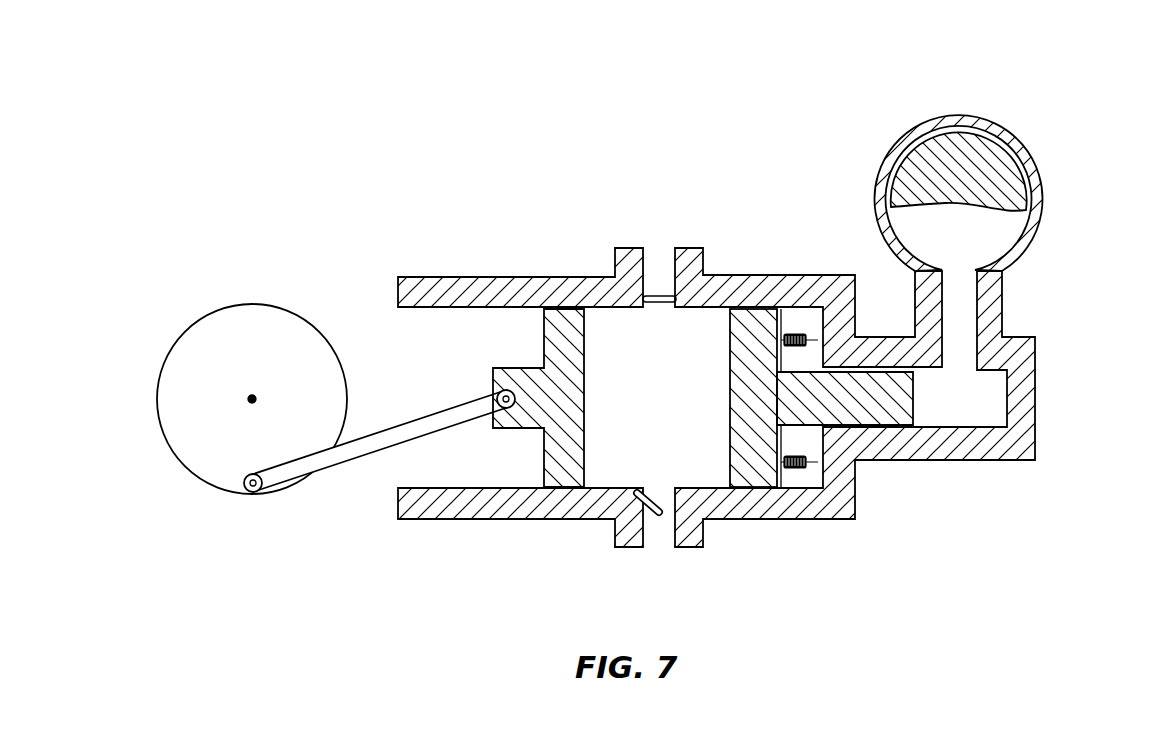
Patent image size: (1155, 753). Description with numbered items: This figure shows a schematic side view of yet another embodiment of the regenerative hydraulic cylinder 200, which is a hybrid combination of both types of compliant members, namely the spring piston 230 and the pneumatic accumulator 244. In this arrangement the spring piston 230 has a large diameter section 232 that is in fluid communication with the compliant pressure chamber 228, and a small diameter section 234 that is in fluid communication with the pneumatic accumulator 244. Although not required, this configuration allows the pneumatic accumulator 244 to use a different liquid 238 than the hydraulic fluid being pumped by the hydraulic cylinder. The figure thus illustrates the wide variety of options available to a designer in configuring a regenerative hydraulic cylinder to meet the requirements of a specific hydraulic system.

The regenerative hydraulic cylinder 200 is at (343, 124).
The compliant pressure chamber 228 is at (620, 363).
The spring piston 230 is at (843, 402).
The large diameter section 232 is at (753, 472).
The small diameter section 234 is at (903, 408).
The liquid 238 is at (968, 395).
The pneumatic accumulator 244 is at (1043, 208).